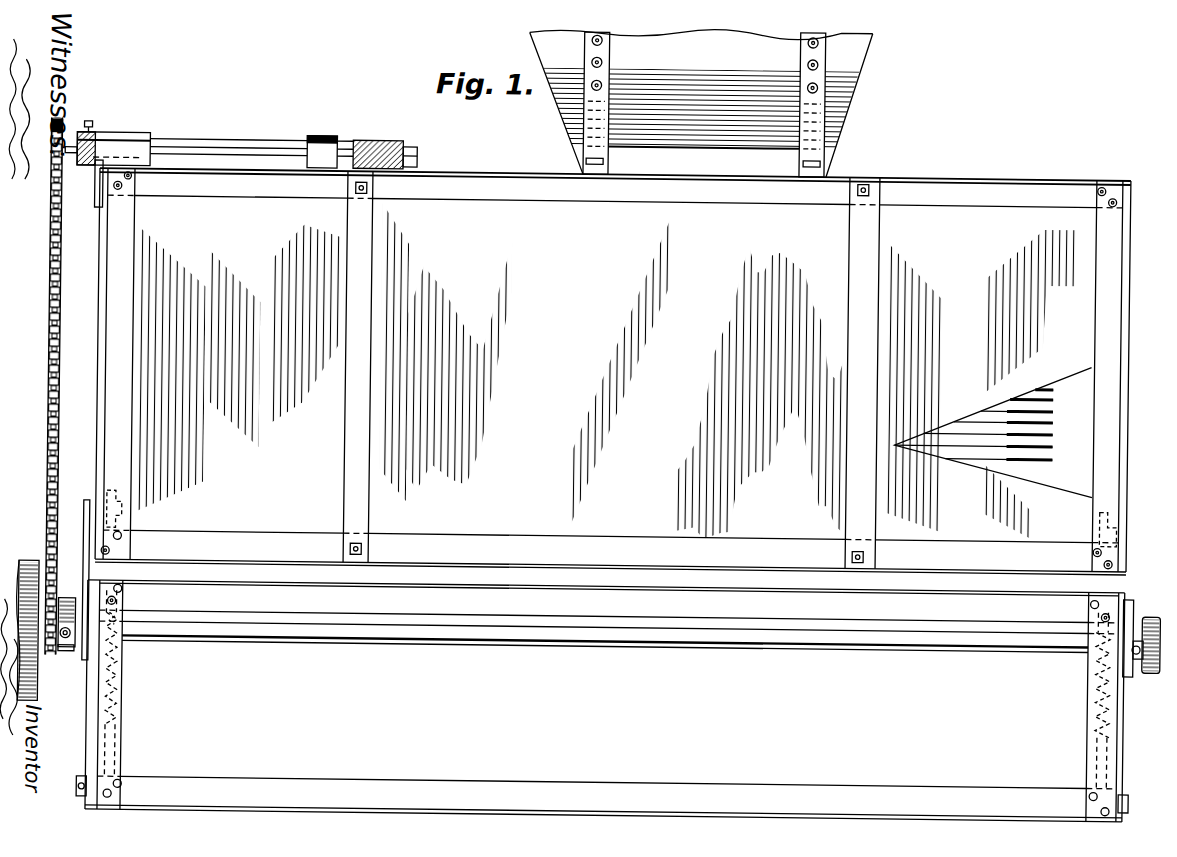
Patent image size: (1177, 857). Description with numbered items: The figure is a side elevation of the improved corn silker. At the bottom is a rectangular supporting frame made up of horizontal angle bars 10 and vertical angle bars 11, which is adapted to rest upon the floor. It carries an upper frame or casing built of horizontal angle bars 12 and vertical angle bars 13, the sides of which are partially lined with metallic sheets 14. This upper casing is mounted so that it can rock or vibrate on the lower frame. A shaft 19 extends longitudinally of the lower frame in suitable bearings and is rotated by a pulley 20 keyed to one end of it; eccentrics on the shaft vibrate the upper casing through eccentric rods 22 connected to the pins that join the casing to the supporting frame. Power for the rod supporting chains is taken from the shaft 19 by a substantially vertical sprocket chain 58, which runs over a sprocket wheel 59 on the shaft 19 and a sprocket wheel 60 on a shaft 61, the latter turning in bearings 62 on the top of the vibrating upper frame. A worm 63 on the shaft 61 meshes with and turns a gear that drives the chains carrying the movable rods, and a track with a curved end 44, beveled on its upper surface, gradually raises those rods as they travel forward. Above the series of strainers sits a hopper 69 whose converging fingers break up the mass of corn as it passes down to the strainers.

The horizontal angle bars 10 is at (583, 784).
The vertical angle bars 11 is at (117, 724).
The horizontal angle bars 12 is at (992, 182).
The vertical angle bars 13 is at (1134, 314).
The metallic sheets 14 is at (606, 372).
The shaft 19 is at (594, 639).
The pulley 20 is at (32, 561).
The eccentric rods 22 is at (76, 656).
The curved end 44 is at (1058, 428).
The sprocket chain 58 is at (52, 316).
The sprocket wheel 59 is at (54, 656).
The sprocket wheel 60 is at (70, 132).
The shaft 61 is at (210, 143).
The bearings 62 is at (117, 132).
The worm 63 is at (383, 137).
The hopper 69 is at (842, 71).